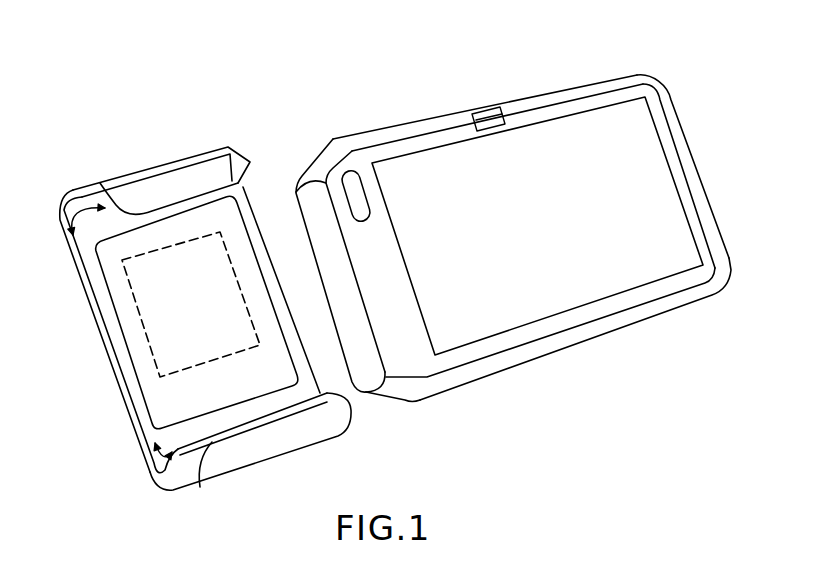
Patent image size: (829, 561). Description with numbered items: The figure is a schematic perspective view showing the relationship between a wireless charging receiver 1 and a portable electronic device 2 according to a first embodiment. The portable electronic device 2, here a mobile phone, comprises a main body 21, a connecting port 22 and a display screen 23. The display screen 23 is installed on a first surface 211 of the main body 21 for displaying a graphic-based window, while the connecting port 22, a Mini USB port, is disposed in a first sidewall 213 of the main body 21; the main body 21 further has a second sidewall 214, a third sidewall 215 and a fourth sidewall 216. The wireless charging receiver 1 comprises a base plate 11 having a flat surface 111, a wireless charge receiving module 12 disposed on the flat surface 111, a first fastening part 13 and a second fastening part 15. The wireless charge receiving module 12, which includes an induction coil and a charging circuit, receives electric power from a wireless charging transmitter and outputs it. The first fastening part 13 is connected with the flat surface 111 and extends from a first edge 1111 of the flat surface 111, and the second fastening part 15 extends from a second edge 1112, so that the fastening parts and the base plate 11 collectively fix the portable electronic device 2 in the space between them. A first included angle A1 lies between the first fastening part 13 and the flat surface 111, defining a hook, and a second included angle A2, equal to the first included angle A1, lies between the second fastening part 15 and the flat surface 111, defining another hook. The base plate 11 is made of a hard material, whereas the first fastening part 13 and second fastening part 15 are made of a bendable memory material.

The wireless charging receiver 1 is at (132, 130).
The base plate 11 is at (107, 323).
The flat surface 111 is at (120, 280).
The first edge 1111 is at (147, 218).
The second edge 1112 is at (265, 403).
The wireless charge receiving module 12 is at (150, 328).
The first fastening part 13 is at (198, 160).
The second fastening part 15 is at (243, 453).
The first included angle A1 is at (70, 205).
The second included angle A2 is at (152, 442).
The portable electronic device 2 is at (602, 50).
The main body 21 is at (380, 137).
The first surface 211 is at (632, 298).
The first sidewall 213 is at (560, 96).
The second sidewall 214 is at (572, 337).
The third sidewall 215 is at (673, 122).
The fourth sidewall 216 is at (398, 347).
The connecting port 22 is at (493, 115).
The display screen 23 is at (658, 198).